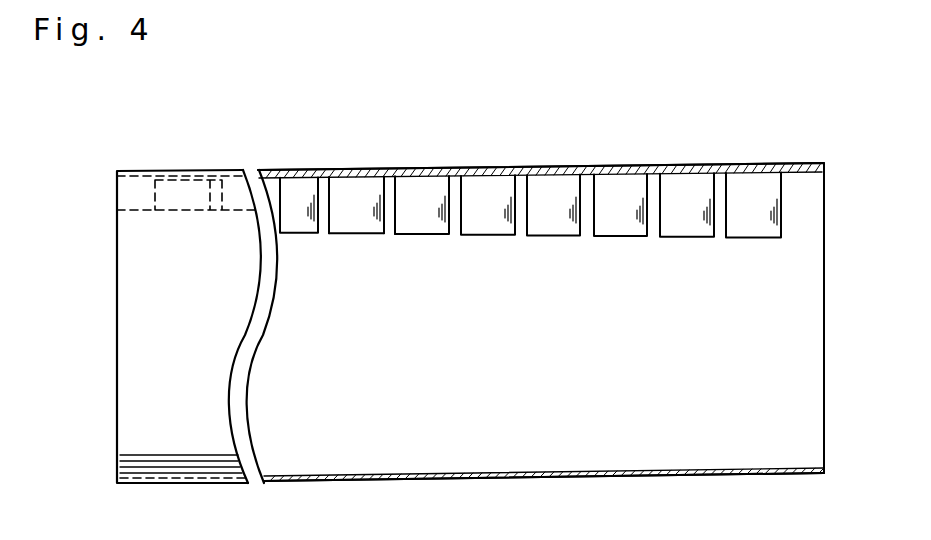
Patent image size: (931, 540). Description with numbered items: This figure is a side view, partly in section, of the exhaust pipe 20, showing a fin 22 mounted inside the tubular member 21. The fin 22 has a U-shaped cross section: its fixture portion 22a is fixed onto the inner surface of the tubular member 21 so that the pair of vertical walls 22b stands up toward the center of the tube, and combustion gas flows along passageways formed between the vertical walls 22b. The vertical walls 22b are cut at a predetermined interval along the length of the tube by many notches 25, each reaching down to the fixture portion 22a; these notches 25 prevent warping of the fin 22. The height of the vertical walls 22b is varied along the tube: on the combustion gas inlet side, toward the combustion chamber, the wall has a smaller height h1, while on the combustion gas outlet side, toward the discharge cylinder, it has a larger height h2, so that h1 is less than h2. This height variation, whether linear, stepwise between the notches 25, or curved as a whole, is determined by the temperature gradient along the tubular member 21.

The cylindrical sleeve / tube body 20 is at (599, 162).
The tubular member 21 is at (535, 478).
The fin 22 is at (492, 186).
The fixture portion 22a is at (312, 172).
The vertical walls 22b is at (413, 190).
The notches 25 is at (722, 182).
The height h1 is at (84, 177).
The height h2 is at (826, 167).